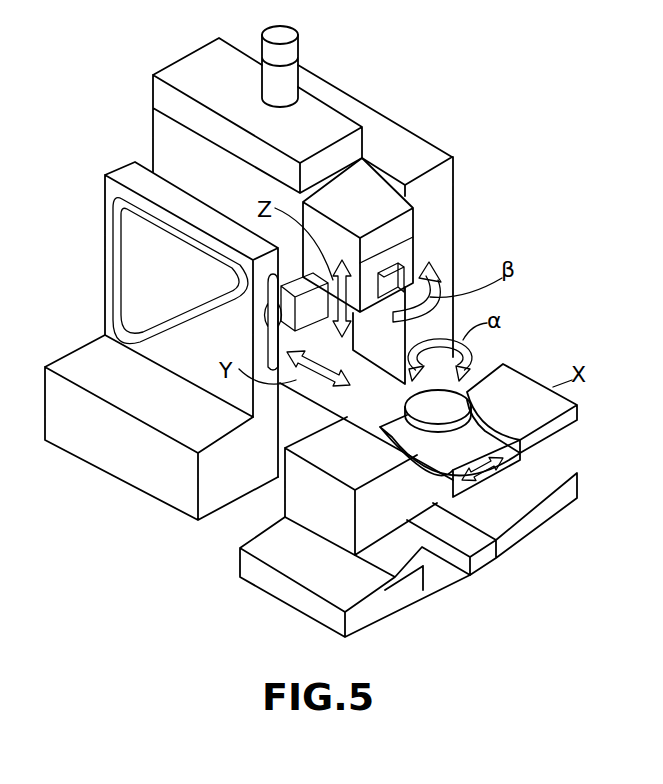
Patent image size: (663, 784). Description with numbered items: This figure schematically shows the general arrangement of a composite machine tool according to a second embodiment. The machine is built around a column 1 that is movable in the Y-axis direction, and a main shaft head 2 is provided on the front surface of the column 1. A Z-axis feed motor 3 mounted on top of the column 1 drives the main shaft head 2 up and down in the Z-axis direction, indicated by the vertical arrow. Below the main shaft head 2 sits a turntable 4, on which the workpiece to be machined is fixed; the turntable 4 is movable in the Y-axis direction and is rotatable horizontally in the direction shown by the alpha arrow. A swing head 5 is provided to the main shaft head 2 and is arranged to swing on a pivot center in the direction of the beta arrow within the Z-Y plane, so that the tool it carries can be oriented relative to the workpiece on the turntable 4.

The column 1 is at (170, 142).
The main shaft head 2 is at (371, 198).
The Z-axis feed motor 3 is at (282, 72).
The turntable 4 is at (452, 405).
The swing head 5 is at (407, 268).